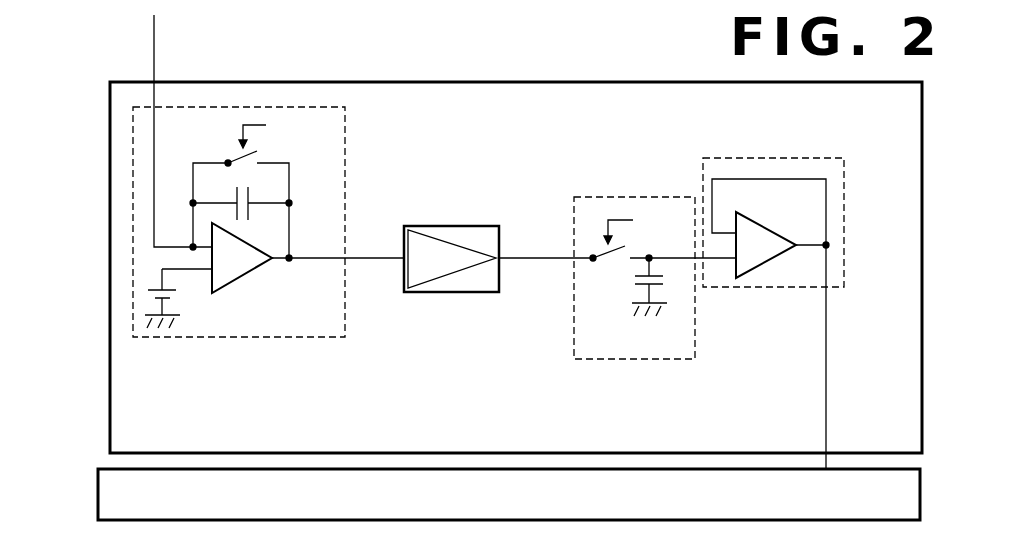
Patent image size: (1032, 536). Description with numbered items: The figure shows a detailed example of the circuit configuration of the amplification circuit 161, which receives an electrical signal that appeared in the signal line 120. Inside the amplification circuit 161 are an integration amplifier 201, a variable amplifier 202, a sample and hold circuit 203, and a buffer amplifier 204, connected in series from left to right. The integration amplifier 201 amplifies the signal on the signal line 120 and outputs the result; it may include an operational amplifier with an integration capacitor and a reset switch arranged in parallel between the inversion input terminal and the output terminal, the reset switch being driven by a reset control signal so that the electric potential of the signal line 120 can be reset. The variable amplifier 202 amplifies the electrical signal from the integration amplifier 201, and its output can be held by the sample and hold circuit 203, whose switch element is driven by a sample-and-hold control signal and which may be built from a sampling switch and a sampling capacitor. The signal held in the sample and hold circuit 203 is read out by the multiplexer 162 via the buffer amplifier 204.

The signal line 120 is at (154, 44).
The amplification circuit 161 is at (109, 160).
The multiplexer 162 is at (98, 492).
The integration amplifier 201 is at (346, 123).
The variable amplifier 202 is at (471, 225).
The sample and hold circuit 203 is at (637, 196).
The buffer amplifier 204 is at (782, 157).